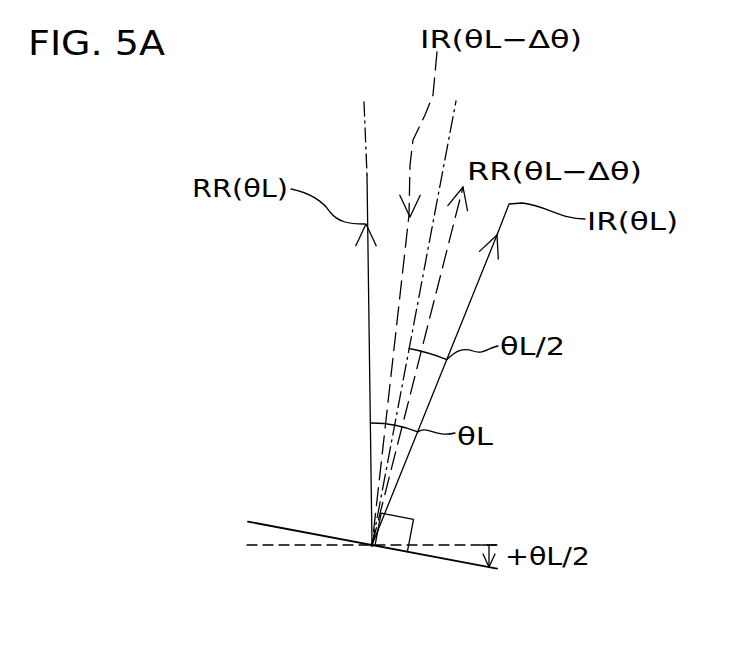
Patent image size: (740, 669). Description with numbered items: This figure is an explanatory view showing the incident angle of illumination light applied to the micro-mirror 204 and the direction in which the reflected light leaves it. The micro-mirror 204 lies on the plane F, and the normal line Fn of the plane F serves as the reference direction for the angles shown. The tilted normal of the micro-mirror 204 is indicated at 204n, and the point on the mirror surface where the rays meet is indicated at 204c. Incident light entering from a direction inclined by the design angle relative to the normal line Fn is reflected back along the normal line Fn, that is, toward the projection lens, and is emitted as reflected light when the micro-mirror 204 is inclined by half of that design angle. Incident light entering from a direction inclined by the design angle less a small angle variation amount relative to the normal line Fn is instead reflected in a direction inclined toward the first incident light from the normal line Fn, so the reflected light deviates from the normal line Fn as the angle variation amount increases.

The micro-mirror 204 is at (381, 570).
The facet center / reflection point 204c is at (372, 546).
The facet normal 204n is at (456, 101).
The plane F is at (265, 548).
The normal line Fn is at (364, 102).